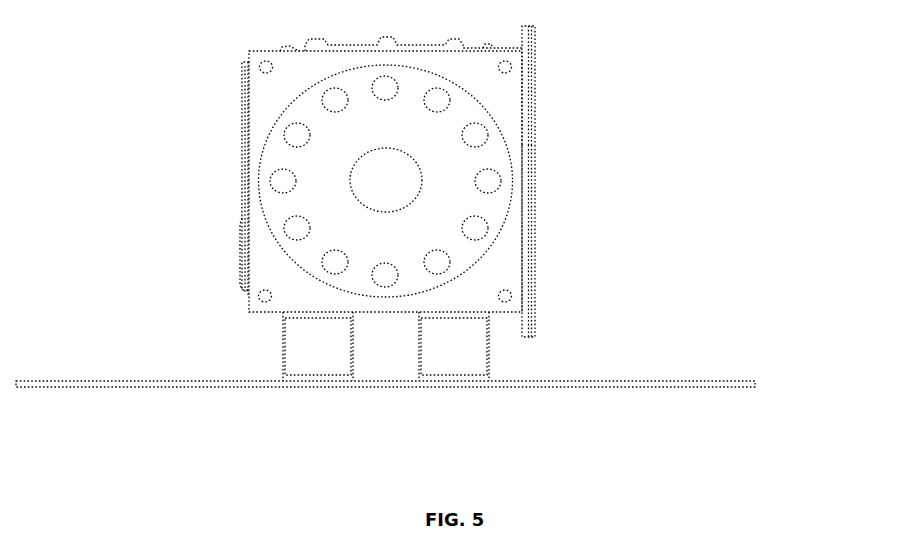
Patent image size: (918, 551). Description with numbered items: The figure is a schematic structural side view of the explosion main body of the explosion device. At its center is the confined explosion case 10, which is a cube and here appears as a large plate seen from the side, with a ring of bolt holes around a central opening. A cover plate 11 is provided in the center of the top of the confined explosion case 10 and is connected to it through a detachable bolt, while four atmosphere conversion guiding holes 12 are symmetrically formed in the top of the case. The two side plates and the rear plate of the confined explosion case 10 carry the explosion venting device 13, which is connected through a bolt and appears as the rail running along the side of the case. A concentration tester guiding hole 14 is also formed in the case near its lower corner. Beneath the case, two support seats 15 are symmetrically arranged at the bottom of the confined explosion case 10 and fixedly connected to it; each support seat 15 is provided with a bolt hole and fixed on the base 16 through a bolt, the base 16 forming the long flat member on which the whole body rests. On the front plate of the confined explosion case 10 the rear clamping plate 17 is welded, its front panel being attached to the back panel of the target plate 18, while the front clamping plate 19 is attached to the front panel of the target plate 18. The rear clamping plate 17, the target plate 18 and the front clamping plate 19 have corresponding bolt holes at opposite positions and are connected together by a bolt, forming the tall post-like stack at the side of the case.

The confined explosion case 10 is at (270, 114).
The cover plate 11 is at (462, 44).
The atmosphere conversion guiding hole 12 is at (280, 47).
The explosion venting device 13 is at (242, 172).
The concentration tester guiding hole 14 is at (262, 298).
The support seat 15 is at (469, 334).
The base 16 is at (690, 385).
The rear clamping plate 17 is at (525, 108).
The target plate 18 is at (535, 182).
The front clamping plate 19 is at (535, 259).